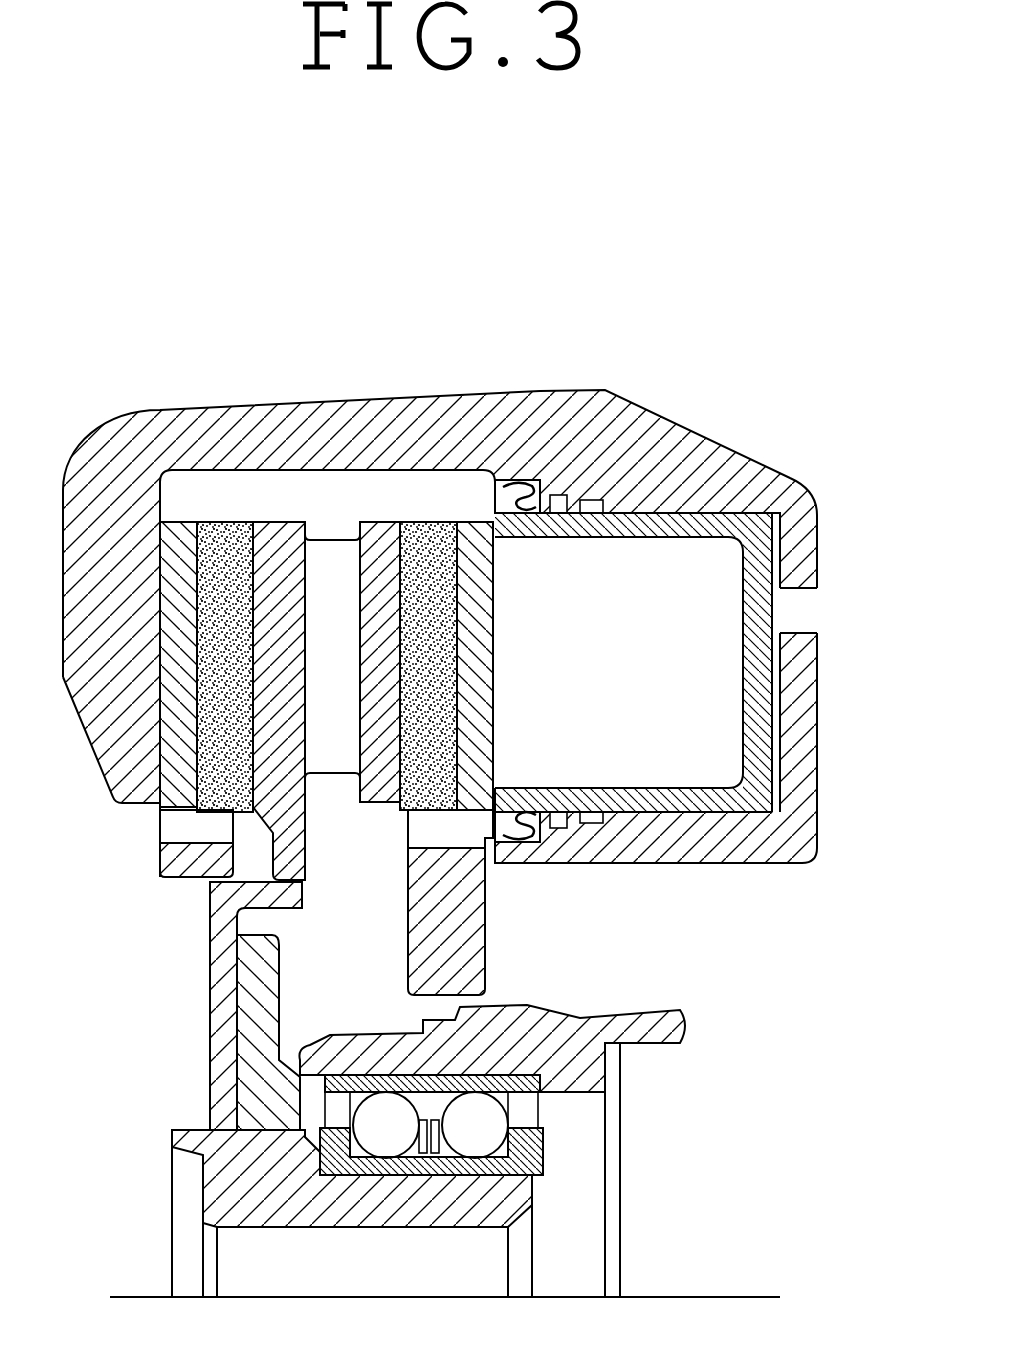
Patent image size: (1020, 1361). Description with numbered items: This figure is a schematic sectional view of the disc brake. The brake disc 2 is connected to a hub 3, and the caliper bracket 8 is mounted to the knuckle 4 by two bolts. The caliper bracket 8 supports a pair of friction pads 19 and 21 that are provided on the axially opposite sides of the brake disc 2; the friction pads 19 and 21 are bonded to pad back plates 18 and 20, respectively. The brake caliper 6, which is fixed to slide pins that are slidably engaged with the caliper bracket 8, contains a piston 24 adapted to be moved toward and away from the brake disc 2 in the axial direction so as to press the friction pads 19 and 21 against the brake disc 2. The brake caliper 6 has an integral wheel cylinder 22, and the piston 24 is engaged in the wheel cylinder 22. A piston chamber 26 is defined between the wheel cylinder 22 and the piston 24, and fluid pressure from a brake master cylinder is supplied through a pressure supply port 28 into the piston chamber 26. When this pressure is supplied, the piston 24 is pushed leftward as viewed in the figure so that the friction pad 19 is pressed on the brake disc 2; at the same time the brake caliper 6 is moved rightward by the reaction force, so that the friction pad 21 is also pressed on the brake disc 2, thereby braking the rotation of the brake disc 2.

The brake disc 2 is at (210, 985).
The hub 3 is at (222, 1190).
The knuckle 4 is at (588, 1033).
The brake caliper 6 is at (553, 390).
The caliper bracket 8 is at (465, 918).
The pad back plate 18 is at (485, 663).
The friction pad 19 is at (432, 530).
The pad back plate 20 is at (167, 768).
The friction pad 21 is at (232, 530).
The wheel cylinder 22 is at (690, 863).
The piston 24 is at (753, 812).
The piston chamber 26 is at (780, 752).
The pressure supply port 28 is at (790, 622).